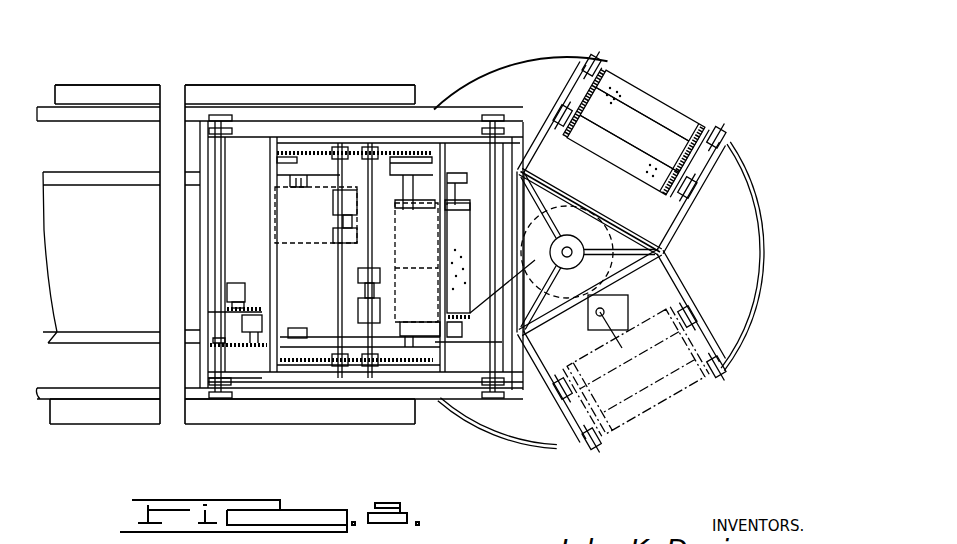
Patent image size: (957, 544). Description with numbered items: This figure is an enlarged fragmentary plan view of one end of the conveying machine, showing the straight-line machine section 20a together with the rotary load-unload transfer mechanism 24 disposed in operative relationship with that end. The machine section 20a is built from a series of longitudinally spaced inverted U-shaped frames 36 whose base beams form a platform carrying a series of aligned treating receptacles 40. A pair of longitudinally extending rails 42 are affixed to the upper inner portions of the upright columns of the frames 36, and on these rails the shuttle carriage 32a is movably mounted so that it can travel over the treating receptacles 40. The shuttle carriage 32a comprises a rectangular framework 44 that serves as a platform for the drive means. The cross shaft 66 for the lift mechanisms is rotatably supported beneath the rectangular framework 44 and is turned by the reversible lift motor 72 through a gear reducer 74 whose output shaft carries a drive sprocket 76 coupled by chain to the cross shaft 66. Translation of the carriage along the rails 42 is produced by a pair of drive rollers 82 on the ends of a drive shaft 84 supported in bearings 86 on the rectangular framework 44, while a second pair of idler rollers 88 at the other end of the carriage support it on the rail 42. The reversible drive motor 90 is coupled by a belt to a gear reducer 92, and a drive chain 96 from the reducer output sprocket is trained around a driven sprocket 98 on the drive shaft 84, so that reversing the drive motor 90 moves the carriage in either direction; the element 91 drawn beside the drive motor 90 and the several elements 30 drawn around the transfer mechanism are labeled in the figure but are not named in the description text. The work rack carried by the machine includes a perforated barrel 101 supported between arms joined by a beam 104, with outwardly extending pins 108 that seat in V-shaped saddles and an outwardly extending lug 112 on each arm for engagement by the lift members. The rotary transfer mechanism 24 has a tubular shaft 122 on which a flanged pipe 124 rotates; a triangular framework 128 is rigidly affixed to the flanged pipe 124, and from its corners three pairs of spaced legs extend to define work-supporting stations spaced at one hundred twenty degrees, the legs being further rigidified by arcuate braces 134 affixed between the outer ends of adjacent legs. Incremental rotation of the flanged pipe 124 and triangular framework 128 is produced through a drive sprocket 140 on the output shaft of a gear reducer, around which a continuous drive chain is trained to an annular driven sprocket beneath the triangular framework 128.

The straight-line machine section 20a is at (277, 75).
The rotary load-unload transfer mechanism 24 is at (695, 297).
The tube holder unit 30 is at (548, 107).
The shuttle carriage 32a is at (352, 116).
The inverted U-shaped frame 36 is at (172, 100).
The treating receptacle 40 is at (80, 188).
The rail 42 is at (68, 116).
The rectangular framework 44 is at (432, 112).
The cross shaft 66 is at (380, 207).
The reversible lift motor 72 is at (343, 197).
The gear reducer 74 is at (342, 233).
The drive sprocket 76 is at (378, 252).
The drive roller 82 is at (221, 128).
The drive shaft 84 is at (218, 220).
The bearing 86 is at (226, 136).
The idler roller 88 is at (497, 115).
The reversible drive motor 90 is at (237, 283).
The arm 91 is at (247, 305).
The gear reducer 92 is at (258, 322).
The drive chain 96 is at (226, 356).
The driven sprocket 98 is at (213, 348).
The perforated barrel 101 is at (628, 93).
The beam 104 is at (642, 132).
The pin 108 is at (733, 147).
The outwardly extending lug 112 is at (562, 62).
The tubular shaft 122 is at (572, 243).
The flanged pipe 124 is at (562, 236).
The triangular framework 128 is at (668, 262).
The arcuate brace 134 is at (767, 241).
The drive sprocket 140 is at (697, 298).